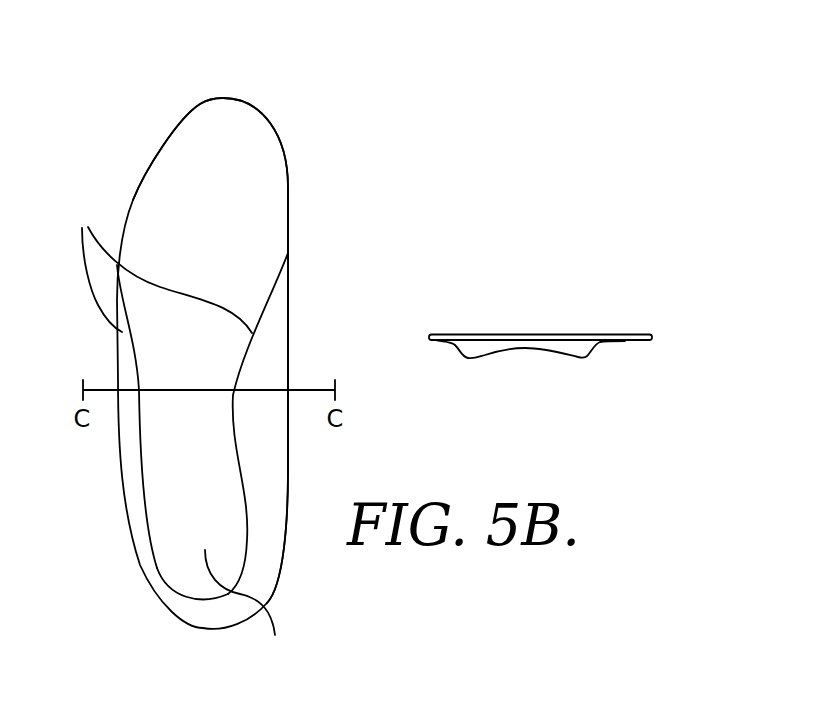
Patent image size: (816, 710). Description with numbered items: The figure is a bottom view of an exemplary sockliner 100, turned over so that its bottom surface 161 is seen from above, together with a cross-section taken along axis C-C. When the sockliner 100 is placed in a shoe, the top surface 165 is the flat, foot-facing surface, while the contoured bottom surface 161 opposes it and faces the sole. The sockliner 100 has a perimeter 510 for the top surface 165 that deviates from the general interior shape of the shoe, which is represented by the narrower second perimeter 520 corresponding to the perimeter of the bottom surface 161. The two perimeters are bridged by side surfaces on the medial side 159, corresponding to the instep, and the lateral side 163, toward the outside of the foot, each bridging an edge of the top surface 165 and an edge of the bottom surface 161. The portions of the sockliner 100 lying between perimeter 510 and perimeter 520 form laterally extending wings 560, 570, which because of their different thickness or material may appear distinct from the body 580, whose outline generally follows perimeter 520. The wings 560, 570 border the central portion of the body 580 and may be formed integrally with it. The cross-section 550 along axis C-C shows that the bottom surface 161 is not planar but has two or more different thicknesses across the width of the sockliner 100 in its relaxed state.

The sockliner 100 is at (123, 102).
The body 580 is at (253, 122).
The second perimeter 520 is at (159, 264).
The perimeter 510 is at (288, 342).
The wing 570 is at (272, 445).
The wing 560 is at (118, 490).
The lateral side 163 is at (152, 565).
The medial side 159 is at (287, 532).
The bottom surface 161 is at (583, 358).
The stabilizer 550 is at (540, 291).
The top surface 165 is at (458, 334).